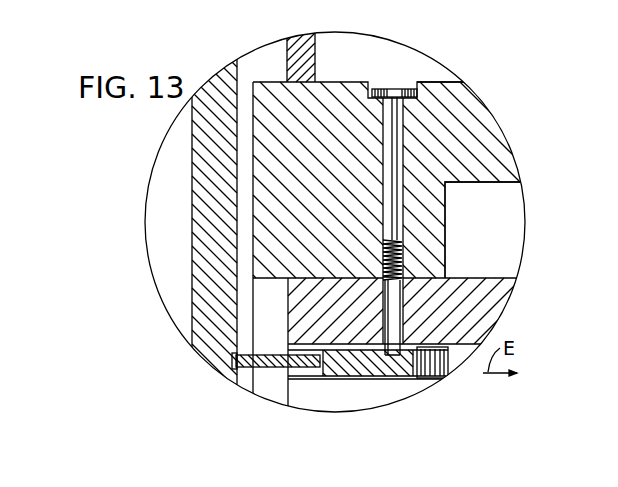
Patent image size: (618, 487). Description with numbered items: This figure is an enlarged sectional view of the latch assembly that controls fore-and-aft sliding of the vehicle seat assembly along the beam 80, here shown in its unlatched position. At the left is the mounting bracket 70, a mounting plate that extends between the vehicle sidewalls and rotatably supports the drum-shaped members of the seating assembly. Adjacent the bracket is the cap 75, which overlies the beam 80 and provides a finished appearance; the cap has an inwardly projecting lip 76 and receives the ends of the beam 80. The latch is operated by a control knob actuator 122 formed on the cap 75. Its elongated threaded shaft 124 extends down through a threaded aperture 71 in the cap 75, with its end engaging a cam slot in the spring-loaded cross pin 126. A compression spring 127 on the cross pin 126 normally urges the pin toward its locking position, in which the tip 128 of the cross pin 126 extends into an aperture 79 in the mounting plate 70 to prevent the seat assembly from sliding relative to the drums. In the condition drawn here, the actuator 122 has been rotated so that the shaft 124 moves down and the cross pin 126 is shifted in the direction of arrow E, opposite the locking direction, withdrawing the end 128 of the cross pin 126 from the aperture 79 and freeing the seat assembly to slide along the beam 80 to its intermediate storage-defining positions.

The mounting bracket 70 is at (213, 110).
The cap 75 is at (442, 82).
The inwardly projecting lip 76 is at (500, 152).
The threaded aperture 71 is at (392, 150).
The control knob actuator 122 is at (393, 88).
The elongated threaded shaft 124 is at (400, 248).
The beam 80 is at (443, 310).
The cross pin 126 is at (400, 368).
The compression spring 127 is at (440, 367).
The tip 128 is at (242, 388).
The aperture 79 is at (230, 360).